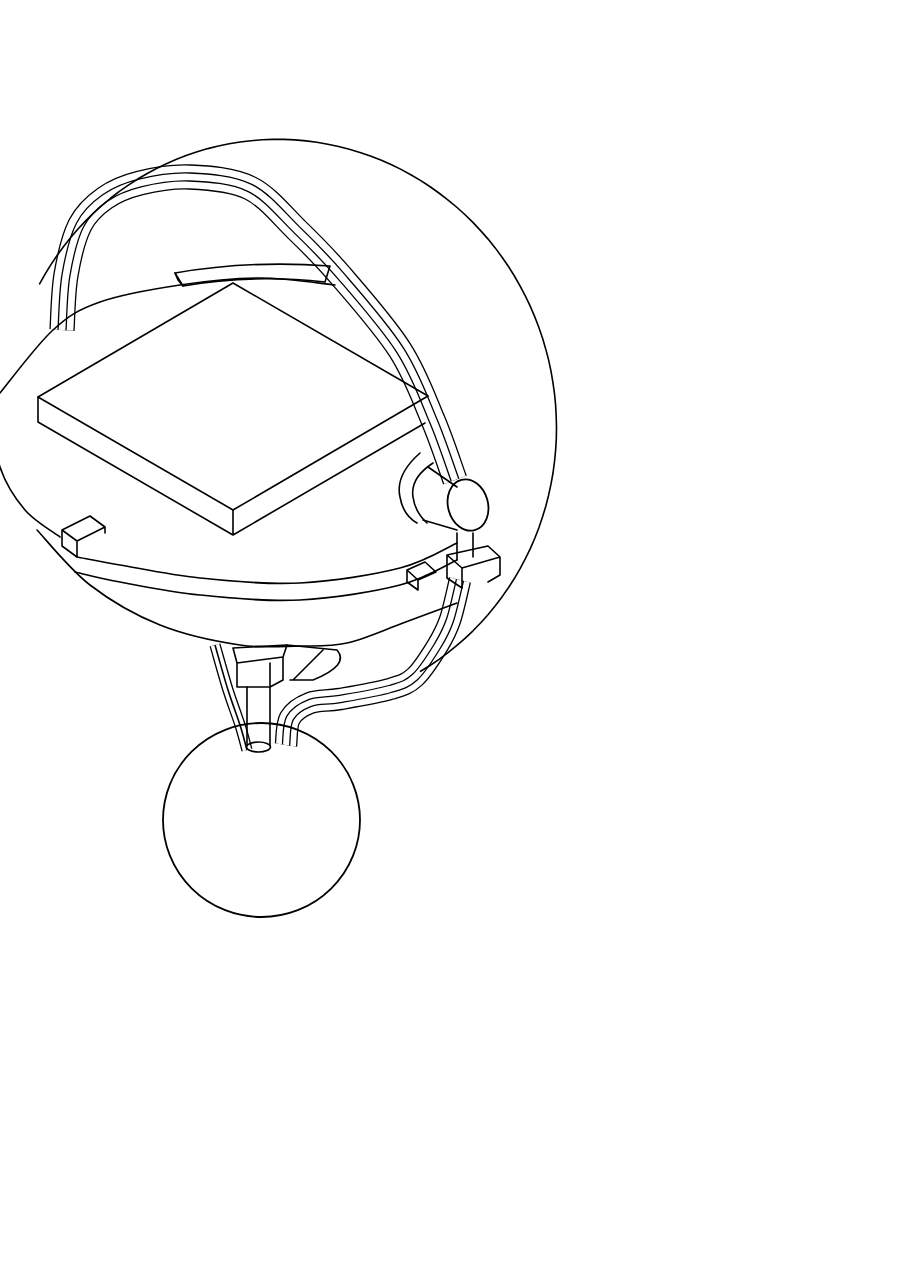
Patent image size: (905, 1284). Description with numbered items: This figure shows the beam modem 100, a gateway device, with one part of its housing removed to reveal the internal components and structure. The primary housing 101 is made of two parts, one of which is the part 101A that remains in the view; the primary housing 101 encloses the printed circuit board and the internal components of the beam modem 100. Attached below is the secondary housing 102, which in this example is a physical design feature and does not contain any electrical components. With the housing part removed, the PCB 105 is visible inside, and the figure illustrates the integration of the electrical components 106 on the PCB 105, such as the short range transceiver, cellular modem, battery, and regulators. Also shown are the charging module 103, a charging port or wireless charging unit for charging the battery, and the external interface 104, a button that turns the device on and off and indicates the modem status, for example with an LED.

The beam modem 100 is at (366, 64).
The primary housing 101 is at (497, 243).
The first part of primary housing 101A is at (487, 390).
The secondary housing 102 is at (363, 817).
The charging module 103 is at (500, 556).
The external interface 104 is at (457, 500).
The PCB 105 is at (86, 503).
The electrical components 106 is at (256, 433).